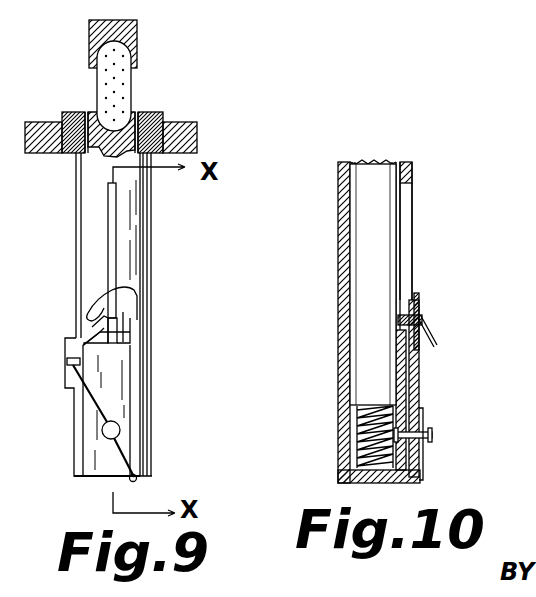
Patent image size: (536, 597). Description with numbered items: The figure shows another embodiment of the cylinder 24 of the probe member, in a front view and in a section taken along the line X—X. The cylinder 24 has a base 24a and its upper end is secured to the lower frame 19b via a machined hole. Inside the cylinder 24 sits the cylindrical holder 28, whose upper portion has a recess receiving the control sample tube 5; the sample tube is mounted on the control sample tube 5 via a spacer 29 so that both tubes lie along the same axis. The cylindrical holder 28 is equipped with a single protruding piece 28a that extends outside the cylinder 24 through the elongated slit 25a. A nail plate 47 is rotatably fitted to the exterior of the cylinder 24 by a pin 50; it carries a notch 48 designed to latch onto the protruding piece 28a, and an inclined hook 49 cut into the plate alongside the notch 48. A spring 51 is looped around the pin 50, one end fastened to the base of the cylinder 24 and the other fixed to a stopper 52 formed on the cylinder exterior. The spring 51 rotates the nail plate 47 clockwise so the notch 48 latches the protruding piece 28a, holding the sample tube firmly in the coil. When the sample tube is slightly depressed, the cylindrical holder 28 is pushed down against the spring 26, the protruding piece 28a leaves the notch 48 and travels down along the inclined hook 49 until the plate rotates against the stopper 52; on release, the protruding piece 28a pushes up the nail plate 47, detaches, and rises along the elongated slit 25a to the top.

In FIG. 9, the control sample tube 5 is at (133, 80).
In FIG. 9, the lower frame 19b is at (185, 125).
In FIG. 9, the cylinder 24 is at (76, 190).
In FIG. 10, the cylinder 24 is at (340, 200).
In FIG. 9, the base 24a is at (95, 478).
In FIG. 10, the base 24a is at (345, 486).
In FIG. 9, the elongated slit 25a is at (112, 222).
In FIG. 10, the elongated slit 25a is at (405, 212).
In FIG. 10, the spring 26 is at (360, 431).
In FIG. 9, the cylindrical holder 28 is at (93, 112).
In FIG. 10, the cylindrical holder 28 is at (340, 282).
In FIG. 9, the protruding piece 28a is at (100, 300).
In FIG. 10, the protruding piece 28a is at (425, 318).
In FIG. 9, the spacer 29 is at (89, 31).
In FIG. 9, the nail plate 47 is at (130, 370).
In FIG. 10, the nail plate 47 is at (419, 367).
In FIG. 9, the notch 48 is at (93, 322).
In FIG. 9, the inclined hook 49 is at (122, 330).
In FIG. 10, the inclined hook 49 is at (433, 347).
In FIG. 9, the pin 50 is at (120, 430).
In FIG. 10, the pin 50 is at (436, 437).
In FIG. 9, the spring 51 is at (93, 400).
In FIG. 10, the spring 51 is at (425, 454).
In FIG. 9, the stopper 52 is at (67, 362).